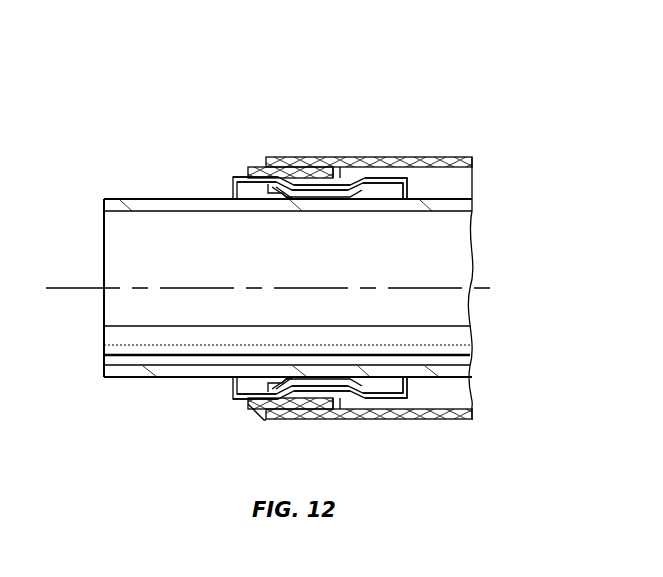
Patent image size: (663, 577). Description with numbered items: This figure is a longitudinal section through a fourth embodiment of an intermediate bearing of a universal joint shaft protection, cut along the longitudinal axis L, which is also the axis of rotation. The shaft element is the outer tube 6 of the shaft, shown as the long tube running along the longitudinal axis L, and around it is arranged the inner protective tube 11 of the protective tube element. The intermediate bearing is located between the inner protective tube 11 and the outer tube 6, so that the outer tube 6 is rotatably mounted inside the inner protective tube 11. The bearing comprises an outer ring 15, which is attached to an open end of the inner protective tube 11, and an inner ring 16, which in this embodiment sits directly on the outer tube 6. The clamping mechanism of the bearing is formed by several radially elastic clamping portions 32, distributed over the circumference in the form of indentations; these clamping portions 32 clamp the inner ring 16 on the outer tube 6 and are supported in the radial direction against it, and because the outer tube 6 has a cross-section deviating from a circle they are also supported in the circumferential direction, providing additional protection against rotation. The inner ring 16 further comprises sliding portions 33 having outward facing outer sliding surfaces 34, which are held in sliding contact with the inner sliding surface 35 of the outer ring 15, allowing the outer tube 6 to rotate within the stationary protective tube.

The outer tube 6 is at (137, 204).
The inner protective tube 11 is at (430, 163).
The outer ring 15 is at (327, 183).
The inner ring 16 is at (380, 192).
The clamping portions 32 is at (307, 186).
The sliding portions 33 is at (240, 174).
The outer sliding surfaces 34 is at (263, 176).
The inner sliding surface 35 is at (294, 188).
The longitudinal axis L is at (65, 288).